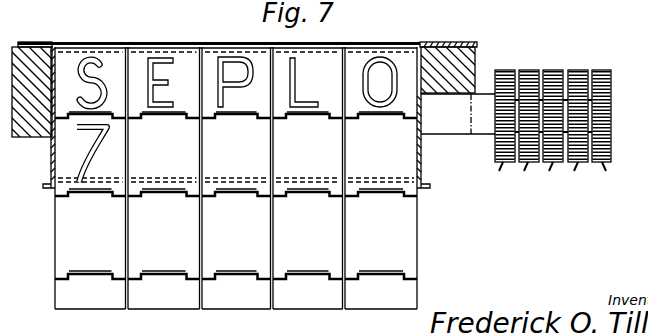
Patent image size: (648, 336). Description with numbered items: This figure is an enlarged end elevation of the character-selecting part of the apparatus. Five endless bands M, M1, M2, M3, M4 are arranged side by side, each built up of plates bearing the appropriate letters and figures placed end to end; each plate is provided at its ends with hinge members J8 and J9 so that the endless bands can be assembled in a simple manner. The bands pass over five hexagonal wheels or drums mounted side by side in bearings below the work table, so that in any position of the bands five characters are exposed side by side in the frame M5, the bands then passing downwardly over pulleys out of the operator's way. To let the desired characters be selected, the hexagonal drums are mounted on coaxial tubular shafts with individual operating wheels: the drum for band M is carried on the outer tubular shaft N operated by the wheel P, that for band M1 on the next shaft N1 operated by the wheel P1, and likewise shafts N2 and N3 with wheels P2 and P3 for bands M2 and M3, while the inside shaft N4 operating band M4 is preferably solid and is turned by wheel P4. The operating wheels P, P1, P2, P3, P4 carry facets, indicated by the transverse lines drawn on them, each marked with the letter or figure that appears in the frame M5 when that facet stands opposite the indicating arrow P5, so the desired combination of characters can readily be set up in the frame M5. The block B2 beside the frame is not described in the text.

The base block B2 is at (35, 127).
The endless band M is at (357, 293).
The endless band M1 is at (297, 297).
The endless band M2 is at (225, 300).
The endless band M3 is at (150, 302).
The endless band M4 is at (77, 194).
The frame M5 is at (442, 42).
The indicating arrow P5 is at (477, 42).
The outer tubular shaft N is at (437, 123).
The tubular shaft N1 is at (518, 98).
The tubular shaft N2 is at (543, 110).
The tubular shaft N3 is at (568, 110).
The inside shaft N4 is at (593, 110).
The operating wheel P is at (496, 174).
The operating wheel P1 is at (527, 174).
The operating wheel P2 is at (553, 174).
The operating wheel P3 is at (581, 174).
The operating wheel P4 is at (610, 174).
The hinge member J8 is at (75, 195).
The hinge member J9 is at (117, 270).